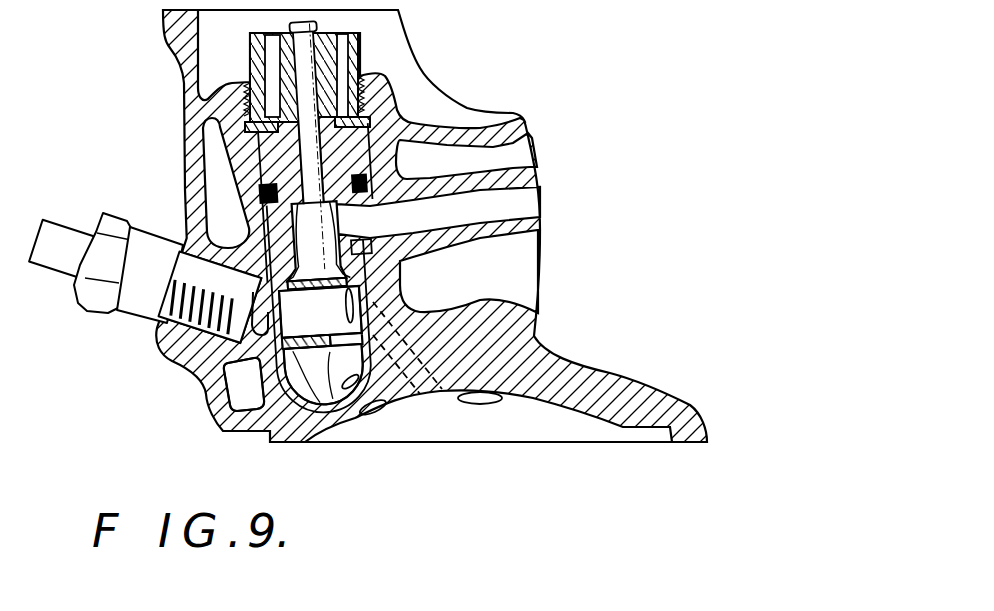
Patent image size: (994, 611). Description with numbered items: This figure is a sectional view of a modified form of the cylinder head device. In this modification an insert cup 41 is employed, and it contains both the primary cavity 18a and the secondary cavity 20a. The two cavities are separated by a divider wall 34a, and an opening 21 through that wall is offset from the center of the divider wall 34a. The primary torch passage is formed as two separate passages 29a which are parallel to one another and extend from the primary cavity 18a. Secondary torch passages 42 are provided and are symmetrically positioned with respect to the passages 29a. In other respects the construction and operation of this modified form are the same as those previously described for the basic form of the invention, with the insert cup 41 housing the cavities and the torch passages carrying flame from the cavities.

The glow plug 18a is at (300, 317).
The cylinder head 20a is at (240, 431).
The precombustion chamber 21 is at (317, 410).
The passage 29a is at (420, 387).
The coolant passage 34a is at (222, 393).
The chamber 41 is at (283, 428).
The spray orifices 42 is at (357, 405).